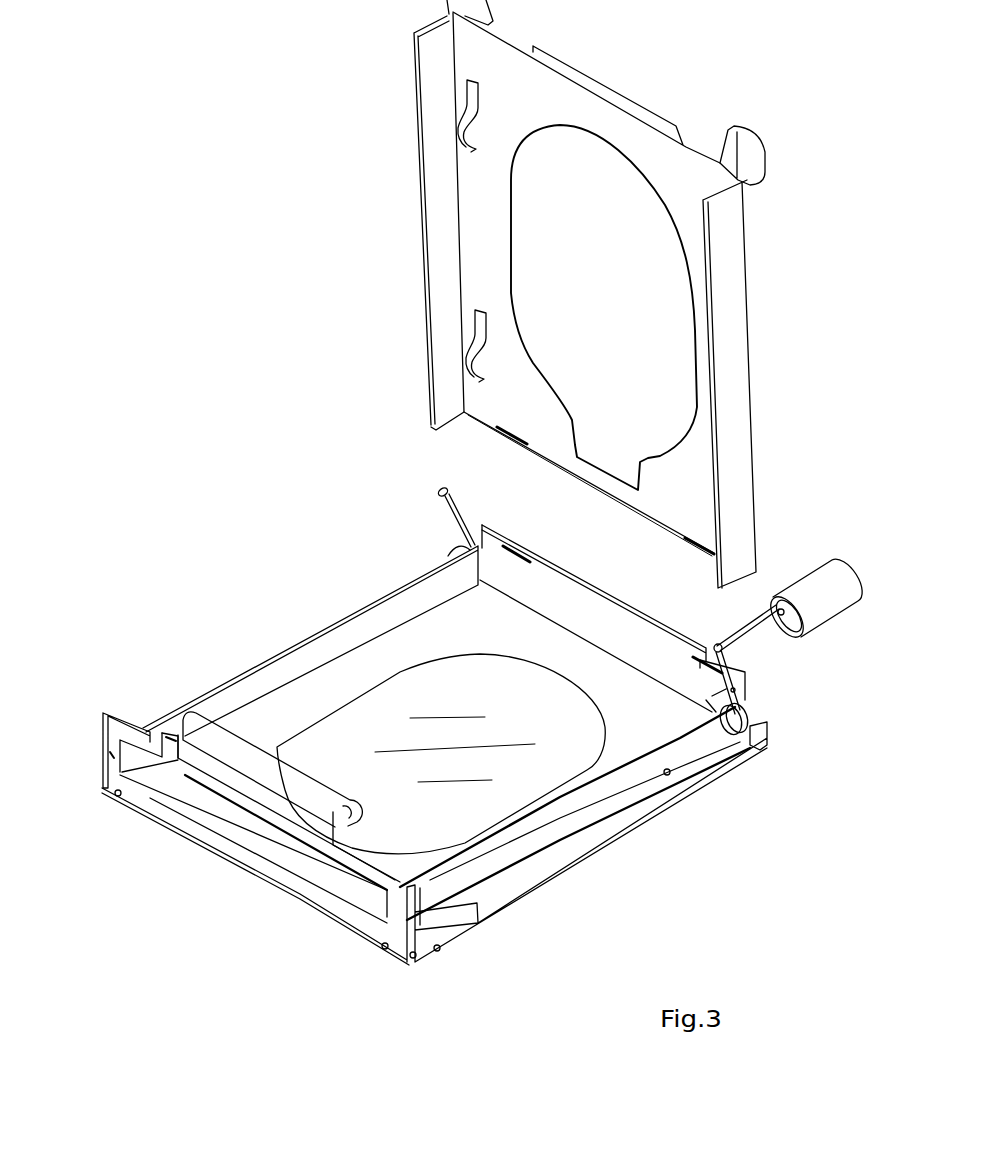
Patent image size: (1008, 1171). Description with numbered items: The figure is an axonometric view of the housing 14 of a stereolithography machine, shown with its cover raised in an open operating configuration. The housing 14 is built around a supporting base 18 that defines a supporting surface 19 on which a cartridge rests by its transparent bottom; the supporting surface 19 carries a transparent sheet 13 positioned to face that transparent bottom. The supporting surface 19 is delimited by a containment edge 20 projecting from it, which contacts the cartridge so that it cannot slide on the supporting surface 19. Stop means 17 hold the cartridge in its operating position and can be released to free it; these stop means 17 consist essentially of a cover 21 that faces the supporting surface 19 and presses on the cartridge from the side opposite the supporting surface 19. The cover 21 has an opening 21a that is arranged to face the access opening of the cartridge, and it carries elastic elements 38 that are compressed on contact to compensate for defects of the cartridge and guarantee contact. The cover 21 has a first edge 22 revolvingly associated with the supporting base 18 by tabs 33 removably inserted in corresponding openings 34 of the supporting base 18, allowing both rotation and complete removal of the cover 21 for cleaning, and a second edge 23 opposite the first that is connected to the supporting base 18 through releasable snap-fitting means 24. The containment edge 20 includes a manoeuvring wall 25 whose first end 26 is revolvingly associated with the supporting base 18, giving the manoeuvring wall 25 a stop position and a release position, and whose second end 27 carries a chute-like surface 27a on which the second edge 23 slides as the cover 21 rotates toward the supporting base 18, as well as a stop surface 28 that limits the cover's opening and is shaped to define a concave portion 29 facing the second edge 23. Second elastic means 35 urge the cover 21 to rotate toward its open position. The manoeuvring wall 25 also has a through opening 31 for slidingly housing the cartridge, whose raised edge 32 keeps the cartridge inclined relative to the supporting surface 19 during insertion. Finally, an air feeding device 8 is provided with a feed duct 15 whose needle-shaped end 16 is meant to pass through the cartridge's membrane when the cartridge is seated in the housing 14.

The air feeding device 8 is at (836, 582).
The transparent sheet 13 is at (363, 717).
The housing 14 is at (459, 731).
The feed duct 15 is at (748, 628).
The needle-shaped end 16 is at (712, 705).
The stop means 17 is at (595, 302).
The supporting base 18 is at (414, 570).
The supporting surface 19 is at (273, 717).
The containment edge 20 is at (575, 812).
The cover 21 is at (730, 300).
The opening 21a is at (702, 418).
The first edge 22 is at (615, 495).
The second edge 23 is at (682, 134).
The releasable snap-fitting means 24 is at (423, 865).
The manoeuvring wall 25 is at (119, 717).
The first end 26 is at (162, 829).
The second end 27 is at (118, 711).
The chute-like surface 27a is at (164, 730).
The stop surface 28 is at (234, 752).
The concave portion 29 is at (340, 820).
The through opening 31 is at (108, 773).
The edge 32 is at (157, 800).
The tabs 33 is at (508, 448).
The openings 34 is at (516, 554).
The second elastic means 35 is at (436, 488).
The elastic elements 38 is at (470, 355).